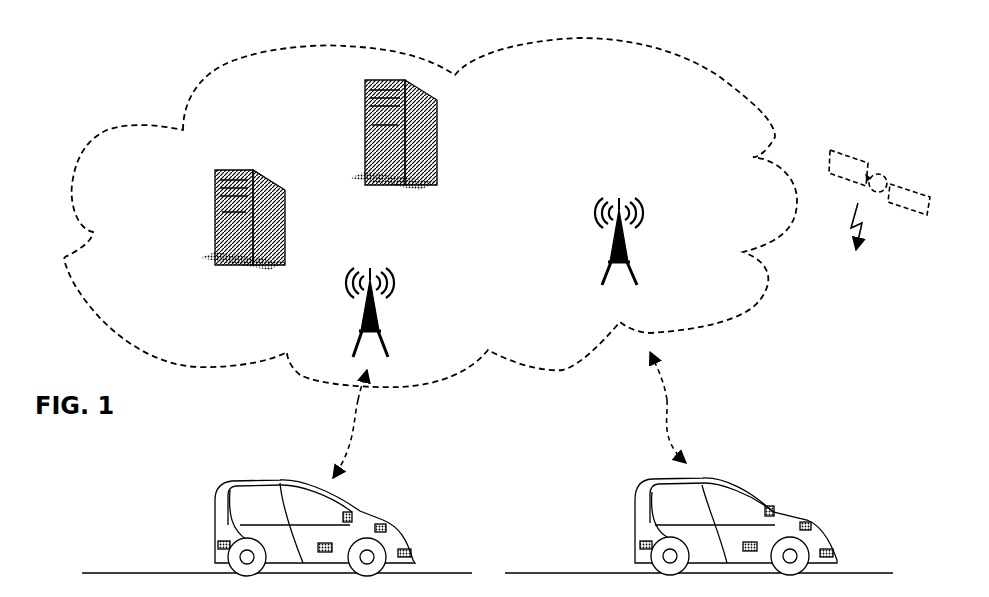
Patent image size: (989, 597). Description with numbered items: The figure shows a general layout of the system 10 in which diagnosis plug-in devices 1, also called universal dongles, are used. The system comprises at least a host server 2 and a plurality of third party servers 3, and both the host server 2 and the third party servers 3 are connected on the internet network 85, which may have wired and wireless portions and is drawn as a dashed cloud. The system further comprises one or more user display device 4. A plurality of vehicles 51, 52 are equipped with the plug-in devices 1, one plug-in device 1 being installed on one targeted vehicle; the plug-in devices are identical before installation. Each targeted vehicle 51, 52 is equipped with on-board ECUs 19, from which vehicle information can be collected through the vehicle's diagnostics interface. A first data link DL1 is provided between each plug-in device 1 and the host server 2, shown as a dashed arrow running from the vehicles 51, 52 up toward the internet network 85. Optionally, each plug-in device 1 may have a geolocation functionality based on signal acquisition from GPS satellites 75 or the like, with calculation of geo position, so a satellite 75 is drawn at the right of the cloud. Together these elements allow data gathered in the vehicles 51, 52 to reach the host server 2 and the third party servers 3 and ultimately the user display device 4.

The internet network 85 is at (160, 122).
The host server 2 is at (240, 276).
The third party servers 3 is at (356, 112).
The GPS satellites 75 is at (909, 178).
The system 10 is at (842, 355).
The first data link DL1 is at (358, 430).
The vehicle 51 is at (210, 530).
The vehicle 52 is at (630, 530).
The plug-in device 1 is at (325, 543).
The user display device 4 is at (353, 510).
The on-board ECUs 19 is at (384, 523).